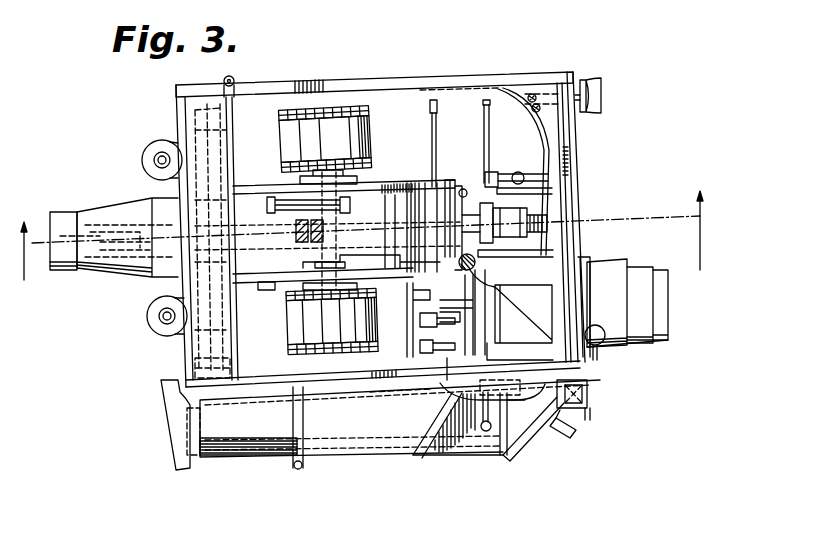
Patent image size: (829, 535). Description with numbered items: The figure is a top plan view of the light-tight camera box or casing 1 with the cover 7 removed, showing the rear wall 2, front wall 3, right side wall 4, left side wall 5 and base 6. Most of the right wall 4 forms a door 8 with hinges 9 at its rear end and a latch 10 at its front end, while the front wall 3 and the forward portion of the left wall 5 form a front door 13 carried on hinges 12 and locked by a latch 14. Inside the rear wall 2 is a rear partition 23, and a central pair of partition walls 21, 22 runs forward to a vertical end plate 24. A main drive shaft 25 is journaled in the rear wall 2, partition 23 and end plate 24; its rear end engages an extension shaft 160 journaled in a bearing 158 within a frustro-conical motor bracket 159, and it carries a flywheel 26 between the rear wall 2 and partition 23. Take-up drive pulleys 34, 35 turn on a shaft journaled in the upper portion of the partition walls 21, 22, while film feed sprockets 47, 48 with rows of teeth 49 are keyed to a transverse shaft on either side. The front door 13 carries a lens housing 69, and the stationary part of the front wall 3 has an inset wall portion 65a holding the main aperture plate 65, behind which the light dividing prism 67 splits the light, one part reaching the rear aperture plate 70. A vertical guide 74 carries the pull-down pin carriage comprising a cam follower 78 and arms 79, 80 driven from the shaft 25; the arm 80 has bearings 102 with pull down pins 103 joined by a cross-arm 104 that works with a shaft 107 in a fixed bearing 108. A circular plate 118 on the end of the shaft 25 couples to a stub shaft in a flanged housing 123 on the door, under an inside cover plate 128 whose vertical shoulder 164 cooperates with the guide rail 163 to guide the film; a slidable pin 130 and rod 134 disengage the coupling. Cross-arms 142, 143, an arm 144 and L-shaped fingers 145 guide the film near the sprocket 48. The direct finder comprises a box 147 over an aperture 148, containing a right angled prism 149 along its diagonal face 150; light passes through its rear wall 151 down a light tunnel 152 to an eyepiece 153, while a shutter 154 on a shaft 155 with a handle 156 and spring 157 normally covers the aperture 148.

The camera box or casing 1 is at (152, 476).
The rear wall 2 is at (184, 112).
The front wall 3 is at (580, 213).
The right side wall 4 is at (273, 388).
The left side wall 5 is at (486, 78).
The base 6 is at (362, 244).
The cover 7 is at (204, 108).
The door 8 is at (360, 395).
The hinges 9 is at (297, 388).
The latch 10 is at (425, 447).
The hinges 12 is at (234, 80).
The front door 13 is at (583, 169).
The latch 14 is at (560, 347).
The partition wall 21 is at (256, 290).
The partition wall 22 is at (243, 180).
The rear partition 23 is at (238, 334).
The vertical end plate 24 is at (446, 180).
The main drive shaft 25 is at (240, 244).
The flywheel 26 is at (185, 366).
The take-up drive pulley 34 is at (266, 283).
The take-up drive pulley 35 is at (284, 197).
The film feed sprocket 47 is at (356, 350).
The film feed sprocket 48 is at (366, 110).
The rows of teeth 49 is at (372, 162).
The main aperture plate 65 is at (565, 308).
The inset wall portion 65a is at (575, 342).
The light dividing member 67 is at (581, 326).
The lens housing 69 is at (648, 358).
The rear aperture plate 70 is at (490, 342).
The vertical guide 74 is at (506, 295).
The cam follower 78 is at (458, 187).
The horizontal arm 79 is at (530, 253).
The horizontal arm 80 is at (478, 312).
The pull down pin bearings 102 is at (447, 358).
The pull down pins 103 is at (418, 272).
The cross-arm 104 is at (418, 320).
The shaft 107 is at (418, 346).
The fixed bearing 108 is at (410, 283).
The circular plate 118 is at (481, 203).
The flanged housing 123 is at (526, 238).
The inside cover plate 128 is at (555, 191).
The slidable pin 130 is at (550, 86).
The rod 134 is at (546, 158).
The horizontal cross-arm 142 is at (514, 181).
The second cross-arm 143 is at (491, 127).
The arm 144 is at (440, 127).
The L-shaped fingers 145 is at (505, 172).
The box 147 is at (348, 462).
The aperture 148 is at (543, 400).
The right angled prism 149 is at (522, 448).
The diagonal face 150 is at (552, 432).
The rear wall 151 is at (492, 440).
The light tunnel 152 is at (375, 458).
The eyepiece 153 is at (262, 457).
The shutter 154 is at (484, 396).
The shaft 155 is at (588, 418).
The handle 156 is at (572, 437).
The spring 157 is at (588, 396).
The bearing 158 is at (108, 213).
The motor bracket 159 is at (80, 208).
The extension shaft 160 is at (133, 284).
The guide rail 163 is at (477, 268).
The vertical shoulder 164 is at (584, 271).